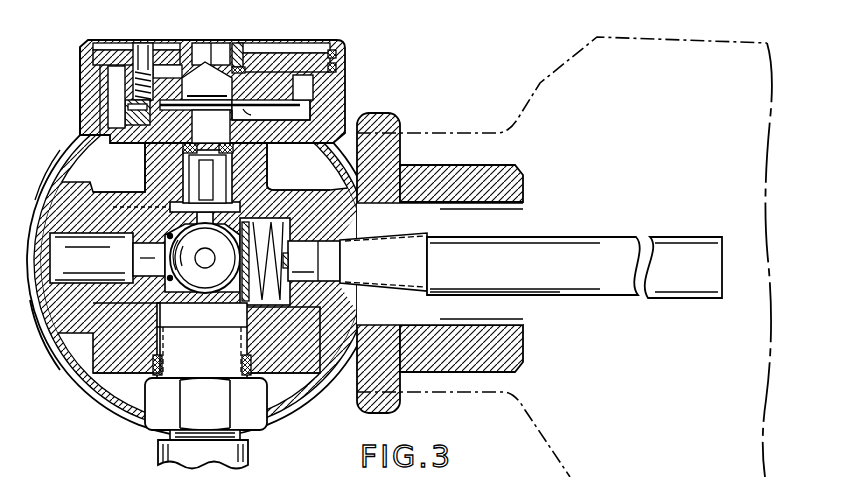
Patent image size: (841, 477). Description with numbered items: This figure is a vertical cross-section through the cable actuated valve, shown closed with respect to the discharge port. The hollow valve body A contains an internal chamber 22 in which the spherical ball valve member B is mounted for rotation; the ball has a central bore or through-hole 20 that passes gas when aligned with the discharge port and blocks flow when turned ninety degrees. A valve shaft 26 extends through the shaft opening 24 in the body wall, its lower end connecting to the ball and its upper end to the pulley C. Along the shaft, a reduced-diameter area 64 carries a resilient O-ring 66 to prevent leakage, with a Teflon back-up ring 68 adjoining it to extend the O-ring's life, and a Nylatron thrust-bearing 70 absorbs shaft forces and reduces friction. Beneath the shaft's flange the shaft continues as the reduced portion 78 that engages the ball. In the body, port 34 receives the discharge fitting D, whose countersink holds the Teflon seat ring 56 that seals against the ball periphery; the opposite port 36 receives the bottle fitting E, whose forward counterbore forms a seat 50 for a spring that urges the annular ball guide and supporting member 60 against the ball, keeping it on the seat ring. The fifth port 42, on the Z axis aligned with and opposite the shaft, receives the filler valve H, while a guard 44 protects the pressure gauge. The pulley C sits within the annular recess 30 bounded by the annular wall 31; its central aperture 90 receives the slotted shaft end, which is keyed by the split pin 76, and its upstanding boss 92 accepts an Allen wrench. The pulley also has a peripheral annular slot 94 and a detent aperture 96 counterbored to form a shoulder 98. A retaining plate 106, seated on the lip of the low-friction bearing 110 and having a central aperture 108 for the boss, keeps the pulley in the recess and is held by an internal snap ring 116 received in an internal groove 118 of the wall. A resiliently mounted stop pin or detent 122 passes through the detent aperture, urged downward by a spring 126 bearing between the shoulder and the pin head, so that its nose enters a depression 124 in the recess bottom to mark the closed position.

The bore or through-hole 20 is at (205, 258).
The internal chamber 22 is at (212, 291).
The shaft opening 24 is at (232, 165).
The valve shaft 26 is at (206, 180).
The annular recess 30 is at (110, 88).
The annular wall 31 is at (83, 97).
The port 34 is at (123, 333).
The port 36 is at (280, 310).
The fifth port 42 is at (253, 350).
The guard 44 is at (97, 402).
The seat 50 is at (320, 263).
The seat ring 56 is at (171, 237).
The ball guide and supporting member 60 is at (246, 293).
The reduced-diameter area 64 is at (207, 176).
The O-ring 66 is at (183, 147).
The back-up ring 68 is at (268, 140).
The thrust-bearing 70 is at (180, 200).
The split pin 76 is at (235, 112).
The reduced-diameter lower shaft portion 78 is at (205, 258).
The central aperture 90 is at (205, 55).
The boss 92 is at (238, 48).
The annular slot 94 is at (300, 100).
The detent aperture 96 is at (108, 85).
The shoulder 98 is at (125, 78).
The retaining plate 106 is at (283, 58).
The central aperture 108 is at (170, 55).
The bearing 110 is at (182, 55).
The internal snap ring 116 is at (336, 52).
The internal groove 118 is at (336, 66).
The stop pin or detent 122 is at (138, 76).
The depression 124 is at (72, 138).
The spring 126 is at (123, 103).
The valve body A is at (110, 327).
The ball valve member B is at (211, 291).
The pulley C is at (313, 82).
The discharge fitting D is at (48, 322).
The bottle fitting E is at (507, 157).
The filler valve H is at (155, 413).